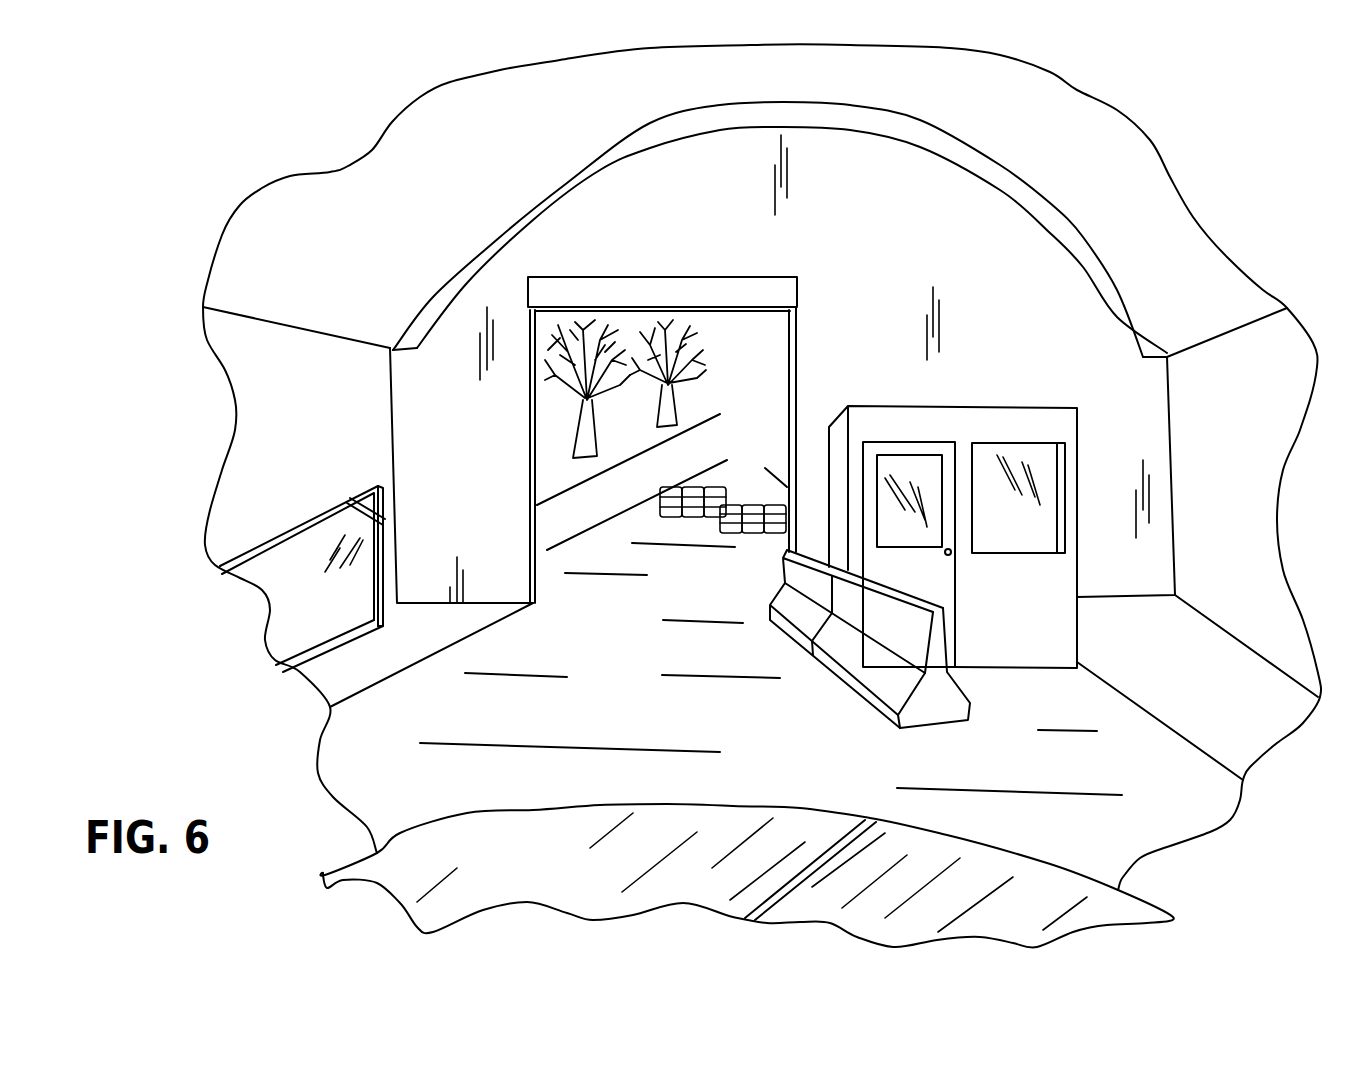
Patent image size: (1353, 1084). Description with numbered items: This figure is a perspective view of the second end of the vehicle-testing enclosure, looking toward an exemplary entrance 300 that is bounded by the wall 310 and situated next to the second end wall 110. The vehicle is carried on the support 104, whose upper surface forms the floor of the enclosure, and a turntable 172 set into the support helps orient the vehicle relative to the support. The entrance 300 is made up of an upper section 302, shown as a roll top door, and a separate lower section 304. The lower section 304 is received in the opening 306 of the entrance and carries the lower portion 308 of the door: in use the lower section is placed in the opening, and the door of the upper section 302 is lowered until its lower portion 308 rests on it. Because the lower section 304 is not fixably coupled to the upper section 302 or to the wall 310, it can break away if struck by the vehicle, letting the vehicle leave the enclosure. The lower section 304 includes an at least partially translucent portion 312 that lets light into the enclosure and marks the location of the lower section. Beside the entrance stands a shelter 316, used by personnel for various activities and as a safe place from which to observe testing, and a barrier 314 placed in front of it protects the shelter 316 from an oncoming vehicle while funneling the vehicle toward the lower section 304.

The support 104 is at (607, 703).
The second end wall 110 is at (453, 392).
The turntable 172 is at (622, 875).
The entrance 300 is at (533, 509).
The upper section 302 is at (598, 283).
The lower section 304 is at (290, 523).
The opening 306 is at (738, 402).
The lower portion 308 is at (553, 305).
The wall 310 is at (920, 244).
The at least partially translucent portion 312 is at (343, 622).
The barrier 314 is at (892, 643).
The shelter 316 is at (1023, 423).